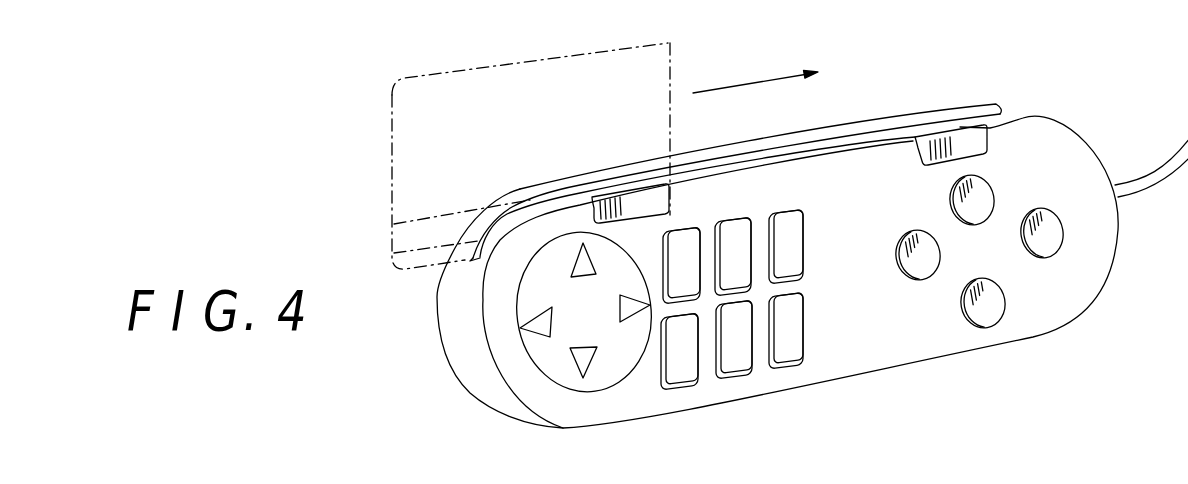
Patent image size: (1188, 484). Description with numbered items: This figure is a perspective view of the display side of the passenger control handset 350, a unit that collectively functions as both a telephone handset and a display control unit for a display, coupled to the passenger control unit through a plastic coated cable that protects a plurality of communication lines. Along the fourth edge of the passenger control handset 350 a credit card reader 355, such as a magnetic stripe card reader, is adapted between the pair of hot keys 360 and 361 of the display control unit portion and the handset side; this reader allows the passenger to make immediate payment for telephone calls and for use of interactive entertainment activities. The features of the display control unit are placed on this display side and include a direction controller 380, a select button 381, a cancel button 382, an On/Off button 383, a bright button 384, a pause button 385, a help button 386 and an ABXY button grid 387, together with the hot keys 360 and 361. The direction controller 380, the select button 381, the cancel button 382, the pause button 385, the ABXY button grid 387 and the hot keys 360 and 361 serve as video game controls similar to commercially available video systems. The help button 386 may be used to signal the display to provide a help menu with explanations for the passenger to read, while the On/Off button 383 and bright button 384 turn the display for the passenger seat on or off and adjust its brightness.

The passenger control handset 350 is at (1046, 110).
The credit card reader 355 is at (868, 136).
The hot key 360 is at (620, 206).
The hot key 361 is at (978, 148).
The direction controller 380 is at (604, 367).
The select button 381 is at (680, 390).
The cancel button 382 is at (703, 208).
The On/Off button 383 is at (738, 380).
The bright button 384 is at (745, 220).
The pause button 385 is at (803, 332).
The help button 386 is at (803, 238).
The ABXY button grid 387 is at (1012, 274).